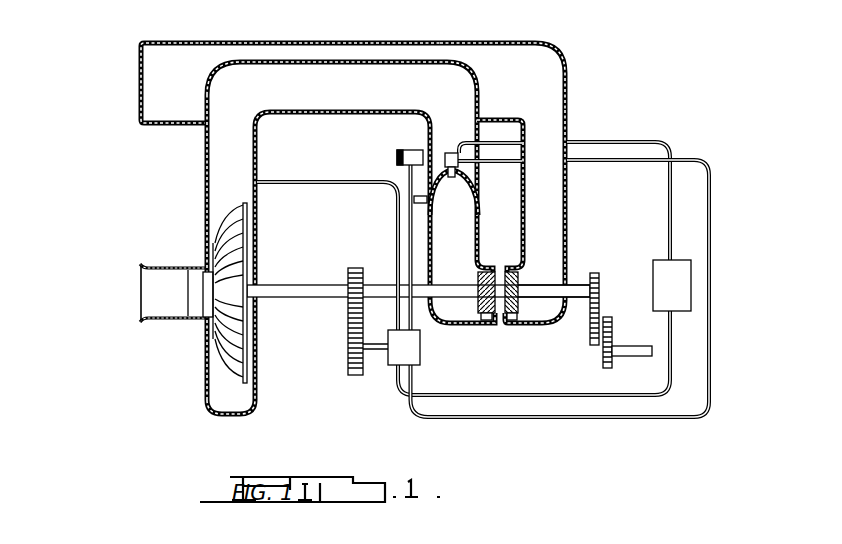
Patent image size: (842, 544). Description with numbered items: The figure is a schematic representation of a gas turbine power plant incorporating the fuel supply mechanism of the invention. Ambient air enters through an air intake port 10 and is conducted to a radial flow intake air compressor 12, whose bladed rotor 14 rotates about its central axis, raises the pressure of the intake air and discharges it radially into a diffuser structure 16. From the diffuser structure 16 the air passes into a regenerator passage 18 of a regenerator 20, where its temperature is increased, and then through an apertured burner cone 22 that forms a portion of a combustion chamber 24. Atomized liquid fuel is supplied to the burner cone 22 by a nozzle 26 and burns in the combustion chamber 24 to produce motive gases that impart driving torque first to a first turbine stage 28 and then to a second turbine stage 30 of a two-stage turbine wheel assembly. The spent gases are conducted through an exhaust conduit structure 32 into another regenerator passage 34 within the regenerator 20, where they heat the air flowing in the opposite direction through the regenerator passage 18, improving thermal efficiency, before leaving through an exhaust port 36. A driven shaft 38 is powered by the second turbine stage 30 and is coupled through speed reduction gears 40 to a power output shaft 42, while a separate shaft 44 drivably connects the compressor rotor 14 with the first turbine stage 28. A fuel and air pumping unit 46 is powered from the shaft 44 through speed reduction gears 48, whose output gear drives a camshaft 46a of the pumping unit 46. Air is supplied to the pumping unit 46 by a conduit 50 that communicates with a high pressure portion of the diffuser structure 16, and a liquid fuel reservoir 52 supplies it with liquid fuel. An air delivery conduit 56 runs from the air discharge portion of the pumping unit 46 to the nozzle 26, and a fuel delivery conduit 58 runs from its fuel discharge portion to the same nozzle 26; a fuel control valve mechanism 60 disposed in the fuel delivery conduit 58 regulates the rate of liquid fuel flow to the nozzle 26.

The air intake port 10 is at (174, 232).
The intake air compressor 12 is at (200, 347).
The bladed rotor 14 is at (243, 236).
The diffuser structure 16 is at (205, 157).
The regenerator passage 18 is at (289, 60).
The regenerator 20 is at (409, 40).
The burner cone 22 is at (463, 194).
The combustion chamber 24 is at (468, 257).
The nozzle 26 is at (448, 153).
The first turbine stage 28 is at (493, 320).
The second turbine stage 30 is at (515, 320).
The exhaust conduit structure 32 is at (567, 218).
The regenerator passage 34 is at (466, 42).
The exhaust port 36 is at (139, 67).
The driven shaft 38 is at (533, 287).
The speed reduction gears 40 is at (613, 322).
The power output shaft 42 is at (635, 346).
The shaft 44 is at (299, 290).
The fuel and air pumping unit 46 is at (413, 357).
The camshaft 46a is at (378, 357).
The speed reduction gears 48 is at (349, 327).
The conduit 50 is at (313, 162).
The liquid fuel reservoir 52 is at (397, 152).
The air delivery conduit 56 is at (575, 420).
The fuel delivery conduit 58 is at (553, 368).
The fuel control valve mechanism 60 is at (682, 283).